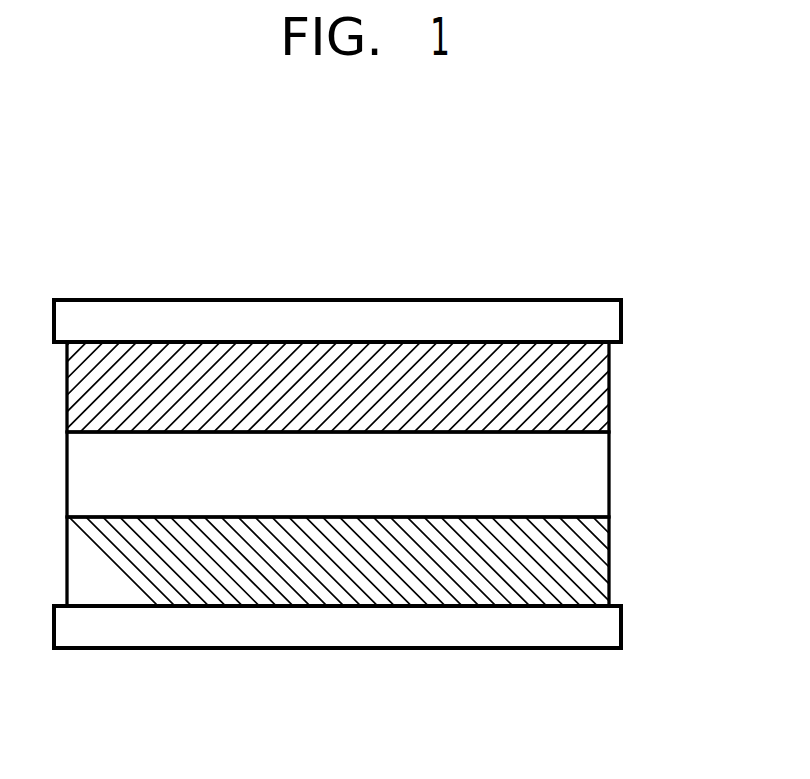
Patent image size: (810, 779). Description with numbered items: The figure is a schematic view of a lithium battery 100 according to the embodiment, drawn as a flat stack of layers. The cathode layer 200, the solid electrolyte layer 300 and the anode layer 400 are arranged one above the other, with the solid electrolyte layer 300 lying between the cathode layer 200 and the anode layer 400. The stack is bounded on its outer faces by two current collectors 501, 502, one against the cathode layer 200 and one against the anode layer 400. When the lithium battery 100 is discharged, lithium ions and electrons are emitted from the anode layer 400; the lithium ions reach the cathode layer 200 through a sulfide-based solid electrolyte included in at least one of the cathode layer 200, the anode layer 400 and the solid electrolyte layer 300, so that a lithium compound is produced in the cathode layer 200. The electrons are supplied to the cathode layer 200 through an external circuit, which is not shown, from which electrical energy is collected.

The lithium battery 100 is at (490, 277).
The current collector 501 is at (575, 313).
The current collector 502 is at (592, 633).
The cathode layer 200 is at (600, 378).
The solid electrolyte layer 300 is at (600, 470).
The anode layer 400 is at (600, 568).